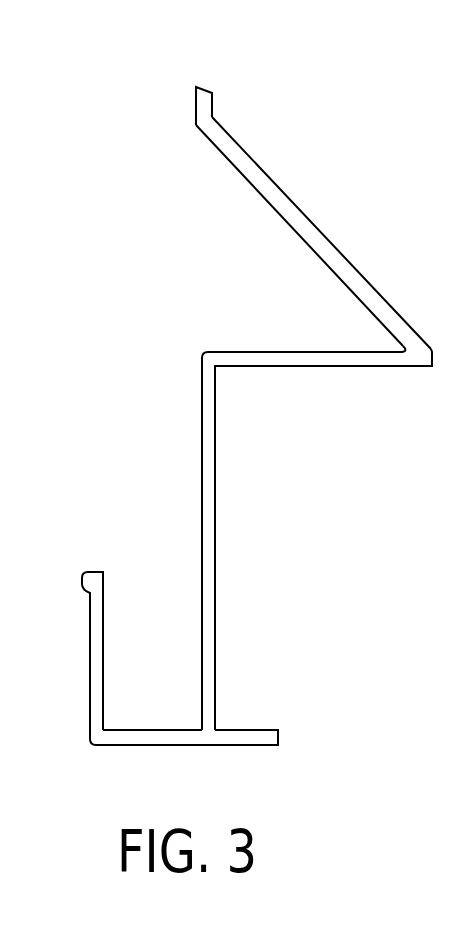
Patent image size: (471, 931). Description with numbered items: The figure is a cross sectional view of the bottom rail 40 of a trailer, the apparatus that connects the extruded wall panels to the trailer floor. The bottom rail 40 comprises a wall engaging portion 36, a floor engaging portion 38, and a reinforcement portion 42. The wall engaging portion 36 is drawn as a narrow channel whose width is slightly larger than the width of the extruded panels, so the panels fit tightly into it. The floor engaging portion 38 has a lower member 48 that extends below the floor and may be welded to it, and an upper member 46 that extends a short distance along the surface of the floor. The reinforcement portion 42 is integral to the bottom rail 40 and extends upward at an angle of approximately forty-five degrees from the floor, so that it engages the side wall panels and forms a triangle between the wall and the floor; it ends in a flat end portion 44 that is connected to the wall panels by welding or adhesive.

The wall engaging portion 36 is at (155, 590).
The floor engaging portion 38 is at (263, 653).
The bottom rail 40 is at (118, 282).
The reinforcement portion 42 is at (295, 220).
The flat end portion 44 is at (205, 93).
The upper member 46 is at (303, 367).
The lower member 48 is at (245, 746).